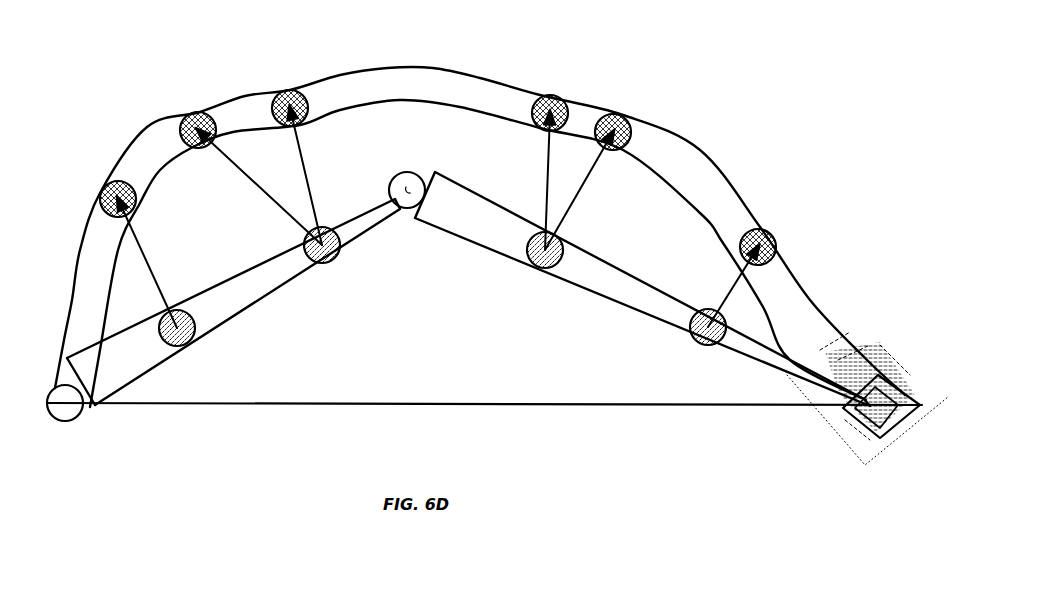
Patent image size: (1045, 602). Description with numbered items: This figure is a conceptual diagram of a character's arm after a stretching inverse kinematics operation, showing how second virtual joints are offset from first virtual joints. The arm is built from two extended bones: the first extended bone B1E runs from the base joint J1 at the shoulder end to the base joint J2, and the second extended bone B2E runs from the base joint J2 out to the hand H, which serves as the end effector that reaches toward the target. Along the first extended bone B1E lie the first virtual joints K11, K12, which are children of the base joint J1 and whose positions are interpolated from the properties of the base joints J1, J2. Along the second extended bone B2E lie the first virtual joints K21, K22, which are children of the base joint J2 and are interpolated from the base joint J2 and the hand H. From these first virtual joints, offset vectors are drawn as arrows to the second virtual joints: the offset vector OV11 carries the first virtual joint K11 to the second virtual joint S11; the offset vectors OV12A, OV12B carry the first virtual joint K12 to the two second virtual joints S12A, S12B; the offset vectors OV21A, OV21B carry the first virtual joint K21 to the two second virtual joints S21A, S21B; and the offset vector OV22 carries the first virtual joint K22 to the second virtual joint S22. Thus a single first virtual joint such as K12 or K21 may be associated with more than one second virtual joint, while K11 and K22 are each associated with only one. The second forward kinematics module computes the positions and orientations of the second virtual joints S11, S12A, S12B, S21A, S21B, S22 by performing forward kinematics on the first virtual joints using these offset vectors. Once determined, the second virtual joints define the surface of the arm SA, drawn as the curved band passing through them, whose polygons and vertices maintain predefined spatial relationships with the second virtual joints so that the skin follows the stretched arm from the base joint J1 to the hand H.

The surface of the arm SA is at (495, 105).
The second virtual joint S11 is at (107, 190).
The second virtual joint S12A is at (185, 107).
The second virtual joint S12B is at (290, 90).
The second virtual joint S21A is at (553, 96).
The second virtual joint S21B is at (613, 116).
The second virtual joint S22 is at (768, 230).
The offset vector OV11 is at (145, 262).
The offset vector OV12A is at (240, 167).
The offset vector OV12B is at (299, 158).
The offset vector OV21A is at (547, 165).
The offset vector OV21B is at (587, 183).
The offset vector OV22 is at (747, 270).
The first virtual joint K11 is at (177, 310).
The first virtual joint K12 is at (307, 242).
The first virtual joint K21 is at (527, 230).
The first virtual joint K22 is at (690, 310).
The base joint J1 is at (80, 407).
The base joint J2 is at (405, 207).
The extended bone B1E is at (240, 290).
The extended bone B2E is at (608, 278).
The hand H is at (835, 407).